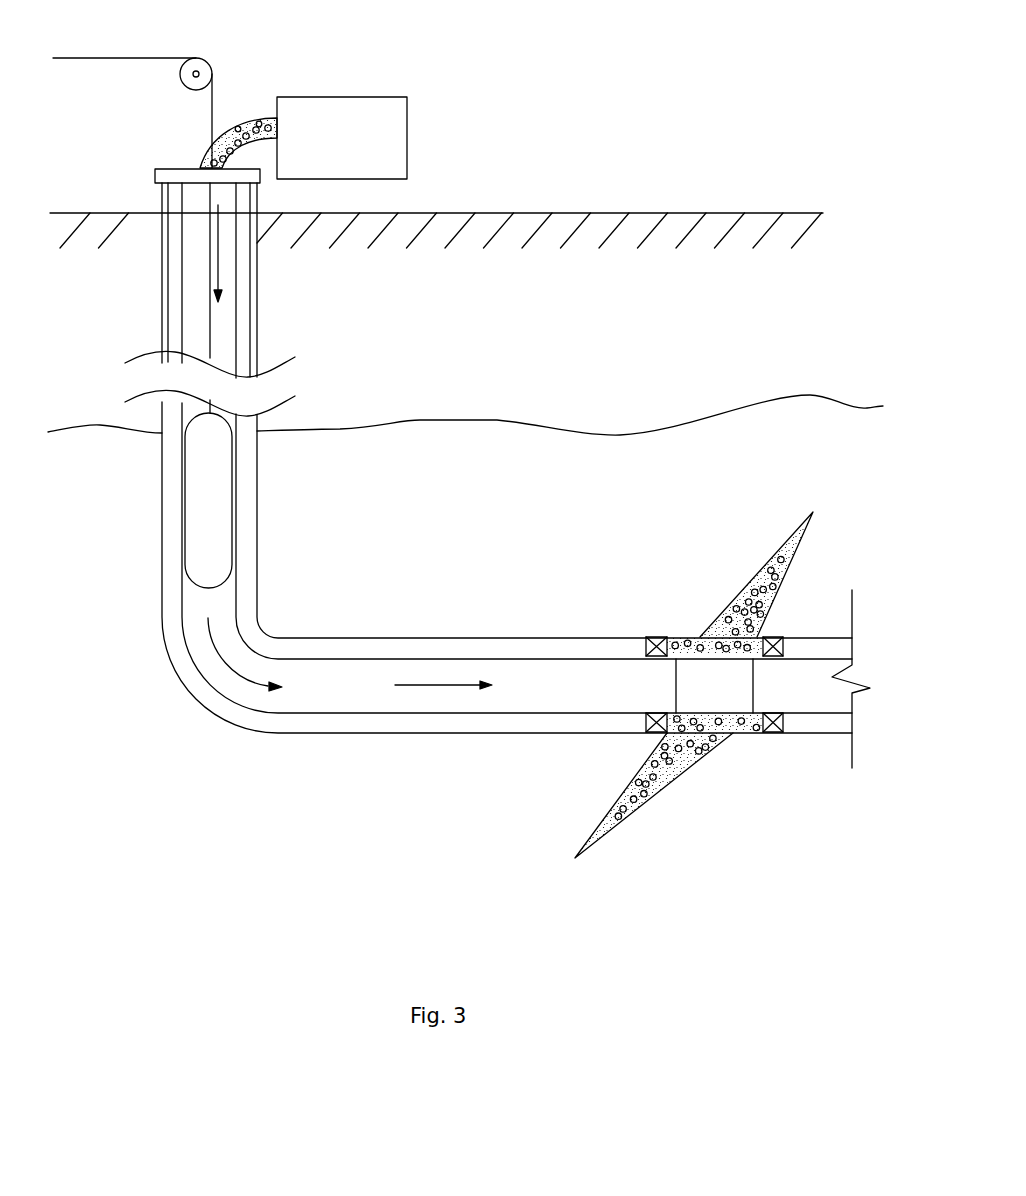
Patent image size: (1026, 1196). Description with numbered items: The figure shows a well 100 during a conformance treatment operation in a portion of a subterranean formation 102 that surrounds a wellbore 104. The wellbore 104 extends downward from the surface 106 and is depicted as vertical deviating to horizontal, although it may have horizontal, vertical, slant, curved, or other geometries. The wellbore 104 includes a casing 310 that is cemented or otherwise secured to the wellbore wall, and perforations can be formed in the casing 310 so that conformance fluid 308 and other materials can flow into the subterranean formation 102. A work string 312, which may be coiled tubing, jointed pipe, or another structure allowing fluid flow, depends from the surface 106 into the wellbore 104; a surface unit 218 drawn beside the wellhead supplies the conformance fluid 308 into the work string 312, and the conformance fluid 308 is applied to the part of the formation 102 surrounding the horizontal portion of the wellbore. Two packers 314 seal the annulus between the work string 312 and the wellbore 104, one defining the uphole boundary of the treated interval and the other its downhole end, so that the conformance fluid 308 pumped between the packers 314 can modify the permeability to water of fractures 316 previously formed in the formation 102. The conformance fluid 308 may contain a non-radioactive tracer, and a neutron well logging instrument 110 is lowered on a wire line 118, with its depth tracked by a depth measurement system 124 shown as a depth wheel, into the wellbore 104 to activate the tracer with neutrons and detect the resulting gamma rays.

The well 100 is at (176, 724).
The subterranean formation 102 is at (521, 462).
The wellbore 104 is at (175, 300).
The surface 106 is at (600, 213).
The neutron well logging instrument 110 is at (232, 488).
The wire line 118 is at (137, 58).
The depth measurement system 124 is at (187, 88).
The proppant source 218 is at (360, 147).
The conformance fluid 308 is at (260, 118).
The casing 310 is at (168, 335).
The work string 312 is at (182, 547).
The packers 314 is at (662, 635).
The fractures 316 is at (741, 573).